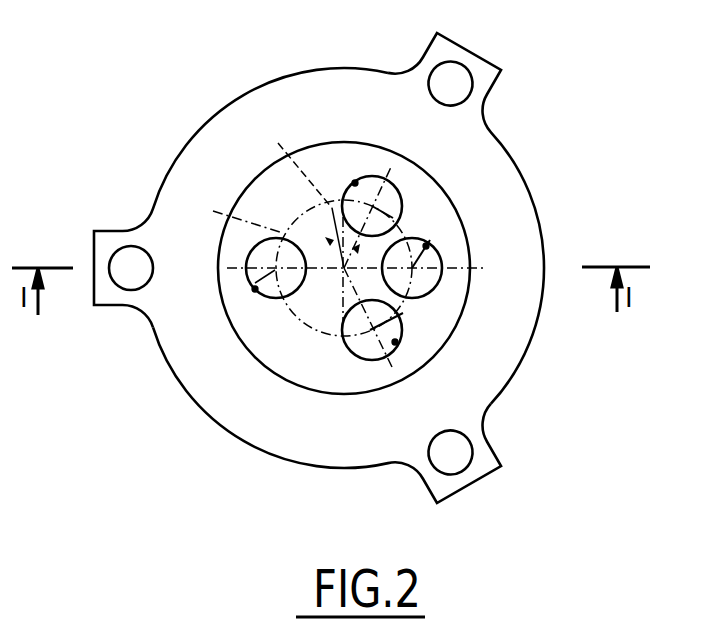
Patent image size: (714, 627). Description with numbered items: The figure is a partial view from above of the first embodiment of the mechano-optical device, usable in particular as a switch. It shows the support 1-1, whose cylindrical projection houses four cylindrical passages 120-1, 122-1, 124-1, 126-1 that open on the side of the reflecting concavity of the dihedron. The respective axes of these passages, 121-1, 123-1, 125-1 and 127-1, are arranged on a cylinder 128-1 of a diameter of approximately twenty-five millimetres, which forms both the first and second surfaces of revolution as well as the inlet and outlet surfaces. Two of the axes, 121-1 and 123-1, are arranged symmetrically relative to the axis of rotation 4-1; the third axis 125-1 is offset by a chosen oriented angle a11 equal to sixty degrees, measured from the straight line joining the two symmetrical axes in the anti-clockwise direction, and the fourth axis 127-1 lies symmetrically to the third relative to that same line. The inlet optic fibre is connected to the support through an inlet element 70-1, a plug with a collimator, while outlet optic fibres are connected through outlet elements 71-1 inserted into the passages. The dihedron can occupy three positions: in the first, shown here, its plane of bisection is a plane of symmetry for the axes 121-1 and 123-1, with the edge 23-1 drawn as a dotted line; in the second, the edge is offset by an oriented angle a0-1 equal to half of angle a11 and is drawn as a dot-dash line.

The support 1-1 is at (203, 118).
The axis of rotation 4-1 is at (338, 272).
The edge of the dihedron 23-1 is at (291, 190).
The inlet element 70-1 is at (268, 262).
The outlet element 71-1 is at (395, 212).
The cylindrical passage 120-1 is at (256, 291).
The axis of passage 121-1 is at (256, 283).
The cylindrical passage 122-1 is at (428, 244).
The axis of passage 123-1 is at (385, 266).
The cylindrical passage 124-1 is at (355, 181).
The axis of passage 125-1 is at (370, 205).
The cylindrical passage 126-1 is at (352, 358).
The axis of passage 127-1 is at (372, 360).
The cylinder 128-1 is at (225, 215).
The oriented angle a11 is at (360, 247).
The oriented angle a0-1 is at (395, 300).